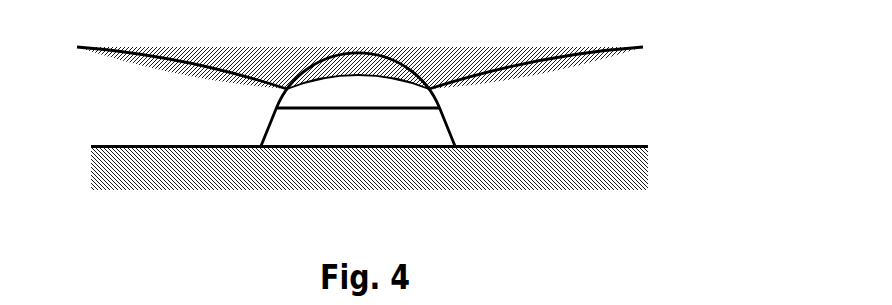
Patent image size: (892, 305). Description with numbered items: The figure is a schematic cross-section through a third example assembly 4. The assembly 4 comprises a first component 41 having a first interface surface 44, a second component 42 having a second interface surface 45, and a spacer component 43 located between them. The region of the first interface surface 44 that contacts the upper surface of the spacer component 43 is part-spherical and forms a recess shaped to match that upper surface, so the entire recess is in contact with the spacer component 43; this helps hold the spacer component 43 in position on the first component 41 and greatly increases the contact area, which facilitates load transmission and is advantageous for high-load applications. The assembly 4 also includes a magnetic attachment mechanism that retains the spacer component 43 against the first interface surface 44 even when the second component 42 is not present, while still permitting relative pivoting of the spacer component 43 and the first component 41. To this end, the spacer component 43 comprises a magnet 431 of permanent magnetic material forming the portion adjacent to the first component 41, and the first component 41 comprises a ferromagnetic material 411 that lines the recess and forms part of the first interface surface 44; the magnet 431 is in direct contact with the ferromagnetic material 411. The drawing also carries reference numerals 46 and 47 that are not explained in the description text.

The assembly 4 is at (698, 163).
The first component 41 is at (239, 76).
The ferromagnetic material 411 is at (401, 58).
The second component 42 is at (350, 180).
The spacer component 43 is at (345, 135).
The magnet 431 is at (338, 90).
The first interface surface 44 is at (366, 70).
The second interface surface 45 is at (290, 148).
The top surface of dome 46 is at (390, 83).
The bottom layer 47 is at (313, 145).